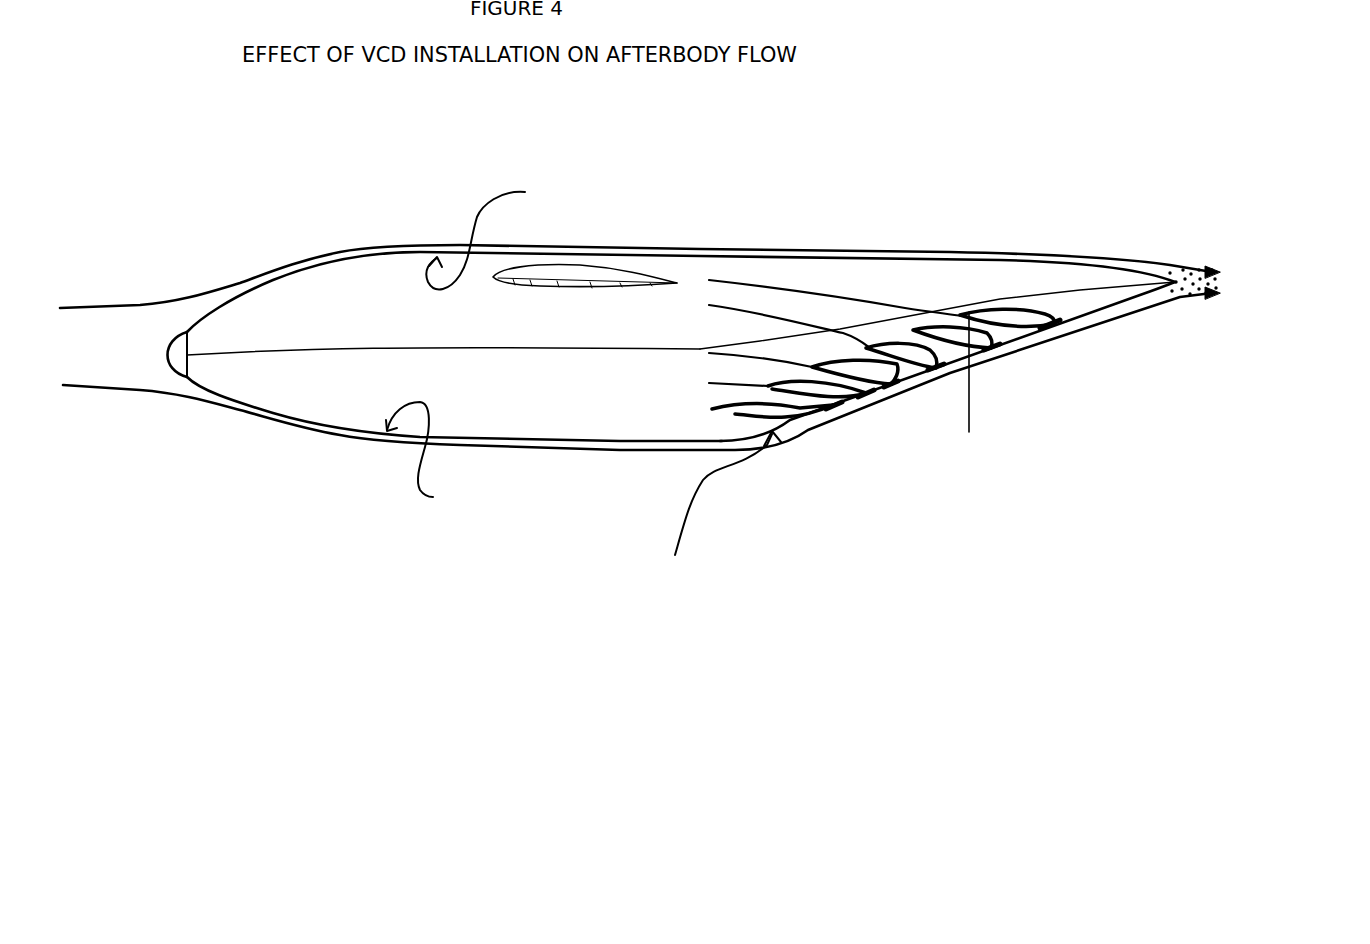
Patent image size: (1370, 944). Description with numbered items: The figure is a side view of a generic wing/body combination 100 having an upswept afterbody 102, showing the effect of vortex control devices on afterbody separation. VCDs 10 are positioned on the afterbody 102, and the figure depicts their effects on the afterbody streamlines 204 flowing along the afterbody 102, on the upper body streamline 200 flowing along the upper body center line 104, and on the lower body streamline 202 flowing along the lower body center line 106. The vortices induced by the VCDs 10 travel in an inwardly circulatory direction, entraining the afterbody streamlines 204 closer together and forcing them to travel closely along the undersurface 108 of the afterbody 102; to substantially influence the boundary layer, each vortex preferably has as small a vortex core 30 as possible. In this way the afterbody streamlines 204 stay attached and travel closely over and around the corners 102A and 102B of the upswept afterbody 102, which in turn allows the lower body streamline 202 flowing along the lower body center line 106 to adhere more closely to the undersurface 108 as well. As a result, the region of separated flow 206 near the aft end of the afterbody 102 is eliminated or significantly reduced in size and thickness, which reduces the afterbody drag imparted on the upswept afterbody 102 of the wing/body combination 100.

The VCD 10 is at (770, 433).
The vortex core 30 is at (1020, 335).
The wing/body combination 100 is at (388, 315).
The upswept afterbody 102 is at (983, 273).
The corner of upswept afterbody 102A is at (932, 372).
The corner of upswept afterbody 102B is at (1047, 306).
The upper body center line 104 is at (514, 219).
The lower body center line 106 is at (442, 462).
The undersurface 108 is at (709, 519).
The upper body streamline 200 is at (1165, 263).
The lower body streamline 202 is at (1160, 297).
The afterbody streamlines 204 is at (832, 292).
The region of separated flow 206 is at (1222, 280).